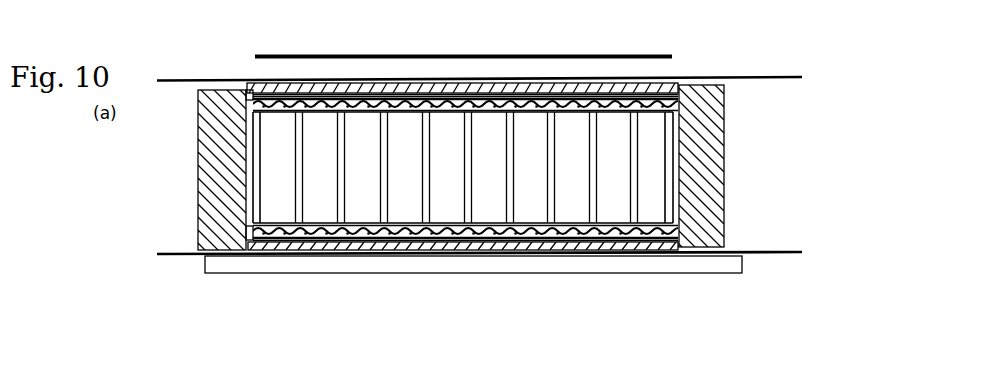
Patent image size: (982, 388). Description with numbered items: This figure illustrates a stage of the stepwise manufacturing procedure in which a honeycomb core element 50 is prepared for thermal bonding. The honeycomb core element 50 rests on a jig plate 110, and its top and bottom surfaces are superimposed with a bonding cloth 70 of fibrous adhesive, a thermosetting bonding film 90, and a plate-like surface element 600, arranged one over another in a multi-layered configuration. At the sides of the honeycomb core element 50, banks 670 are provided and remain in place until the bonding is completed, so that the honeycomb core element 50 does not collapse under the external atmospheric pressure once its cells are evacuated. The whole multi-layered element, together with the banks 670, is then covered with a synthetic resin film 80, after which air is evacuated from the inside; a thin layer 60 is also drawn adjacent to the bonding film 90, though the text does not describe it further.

The plate-like surface element 600 is at (663, 82).
The synthetic resin film 80 is at (776, 77).
The thermosetting bonding film 90 is at (672, 92).
The bonding cloth 70 is at (680, 108).
The honeycomb core element 50 is at (662, 167).
The bank 670 is at (197, 200).
The jig plate 110 is at (420, 268).
The electrode layer 60 is at (660, 255).